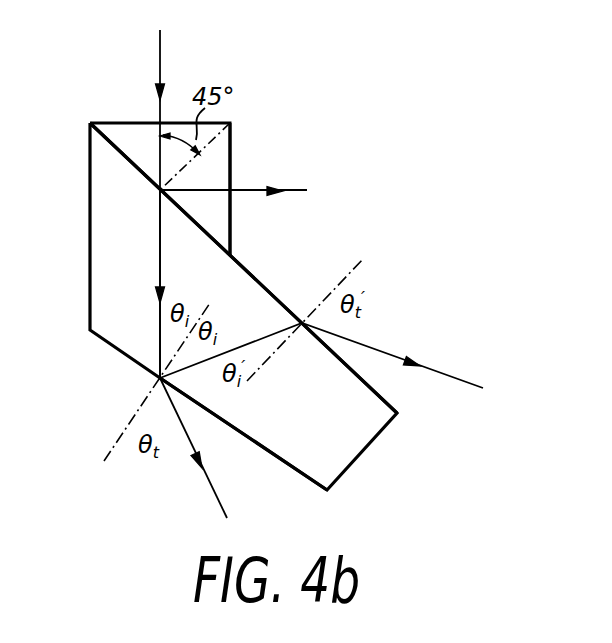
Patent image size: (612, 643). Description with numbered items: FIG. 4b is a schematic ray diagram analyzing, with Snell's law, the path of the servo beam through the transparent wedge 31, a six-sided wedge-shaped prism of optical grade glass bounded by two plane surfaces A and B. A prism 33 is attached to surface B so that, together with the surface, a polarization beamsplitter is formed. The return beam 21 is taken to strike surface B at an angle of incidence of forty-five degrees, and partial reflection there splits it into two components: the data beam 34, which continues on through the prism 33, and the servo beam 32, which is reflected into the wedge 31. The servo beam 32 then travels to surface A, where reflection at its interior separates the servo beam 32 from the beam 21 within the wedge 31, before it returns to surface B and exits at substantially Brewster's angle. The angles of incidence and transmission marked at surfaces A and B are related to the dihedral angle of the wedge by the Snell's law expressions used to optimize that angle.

The beam 21 is at (163, 53).
The wedge 31 is at (137, 352).
The servo beam 32 is at (163, 263).
The prism 33 is at (214, 163).
The data beam 34 is at (283, 196).
The surface A is at (252, 442).
The surface B is at (241, 266).